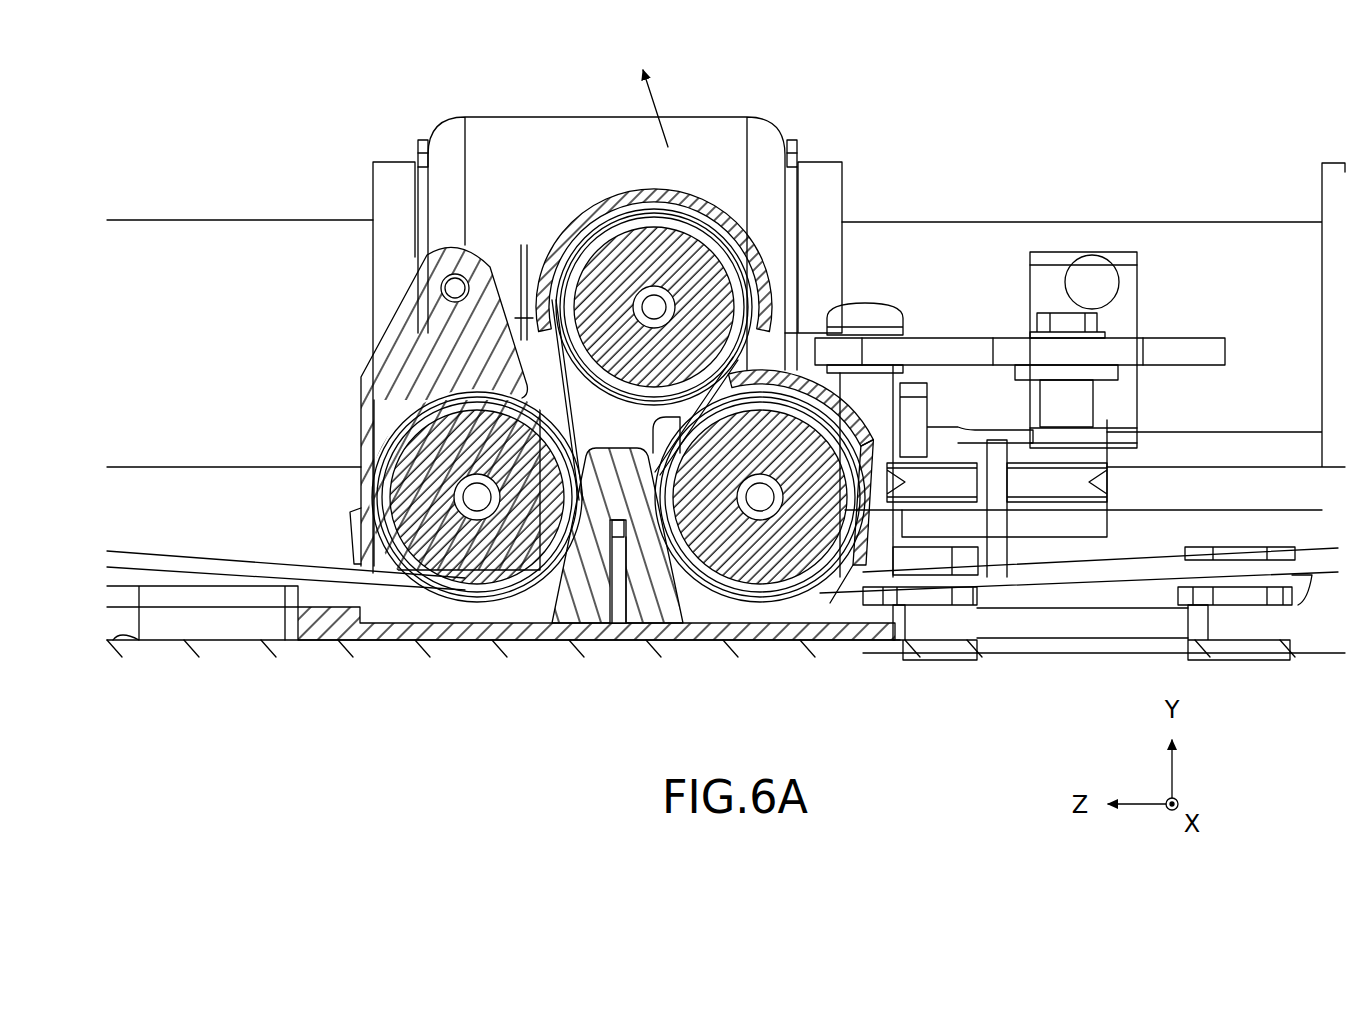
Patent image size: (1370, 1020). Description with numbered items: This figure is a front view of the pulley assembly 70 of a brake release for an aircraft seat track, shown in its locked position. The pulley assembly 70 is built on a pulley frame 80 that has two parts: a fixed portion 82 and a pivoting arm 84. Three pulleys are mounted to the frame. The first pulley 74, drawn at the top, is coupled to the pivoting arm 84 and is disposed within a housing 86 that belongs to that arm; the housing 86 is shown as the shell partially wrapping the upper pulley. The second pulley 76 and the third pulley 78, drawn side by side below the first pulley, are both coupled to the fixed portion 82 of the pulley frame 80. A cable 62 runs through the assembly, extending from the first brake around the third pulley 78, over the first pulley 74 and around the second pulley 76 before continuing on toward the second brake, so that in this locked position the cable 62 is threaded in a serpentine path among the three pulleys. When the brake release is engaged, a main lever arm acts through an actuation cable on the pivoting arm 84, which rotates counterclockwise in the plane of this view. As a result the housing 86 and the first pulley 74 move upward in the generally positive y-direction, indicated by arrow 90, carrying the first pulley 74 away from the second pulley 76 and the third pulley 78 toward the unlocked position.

The cable 62 is at (697, 228).
The pulley assembly 70 is at (582, 143).
The first pulley 74 is at (622, 268).
The second pulley 76 is at (762, 567).
The third pulley 78 is at (492, 560).
The pulley frame 80 is at (400, 400).
The fixed portion 82 is at (382, 383).
The pivoting arm 84 is at (533, 367).
The housing 86 is at (575, 228).
The arrow 90 is at (665, 112).